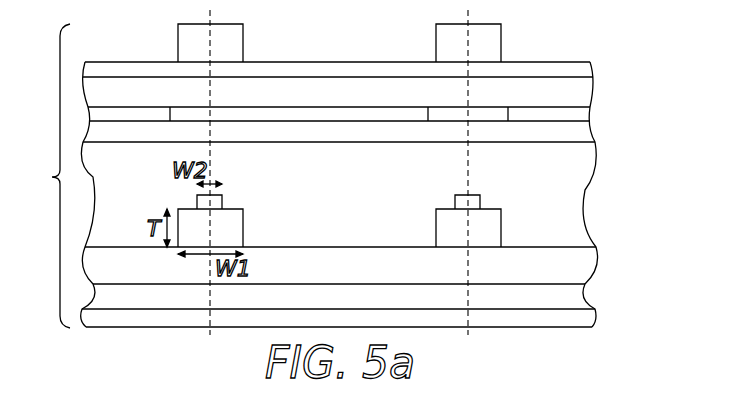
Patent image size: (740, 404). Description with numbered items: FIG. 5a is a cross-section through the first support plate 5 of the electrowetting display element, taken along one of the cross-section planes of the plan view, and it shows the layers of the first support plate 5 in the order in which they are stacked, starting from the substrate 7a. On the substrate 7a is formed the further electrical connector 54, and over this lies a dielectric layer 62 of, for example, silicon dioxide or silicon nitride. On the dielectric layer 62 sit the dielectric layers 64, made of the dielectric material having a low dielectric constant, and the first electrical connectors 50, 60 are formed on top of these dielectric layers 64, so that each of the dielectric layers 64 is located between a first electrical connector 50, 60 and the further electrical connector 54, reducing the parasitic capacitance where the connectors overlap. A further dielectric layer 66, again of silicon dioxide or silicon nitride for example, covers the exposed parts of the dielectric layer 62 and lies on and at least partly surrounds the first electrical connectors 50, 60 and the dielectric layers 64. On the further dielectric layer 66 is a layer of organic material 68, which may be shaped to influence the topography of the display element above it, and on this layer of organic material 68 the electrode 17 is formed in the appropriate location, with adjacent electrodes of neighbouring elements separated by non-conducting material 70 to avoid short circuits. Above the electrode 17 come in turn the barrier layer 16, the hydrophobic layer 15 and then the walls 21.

The first support plate 5 is at (314, 176).
The hydrophobic layer 15 is at (594, 68).
The barrier layer 16 is at (594, 92).
The electrode 17 is at (340, 112).
The non-conducting material 70 is at (180, 112).
The layer of organic material 68 is at (590, 130).
The further dielectric layer 66 is at (578, 190).
The dielectric layer 62 is at (582, 265).
The further electrical connector 54 is at (582, 298).
The substrate 7a is at (582, 320).
The walls 21 is at (246, 29).
The dielectric layers 64 is at (245, 215).
The first electrical connector 50 is at (222, 200).
The first electrical connector 60 is at (480, 200).